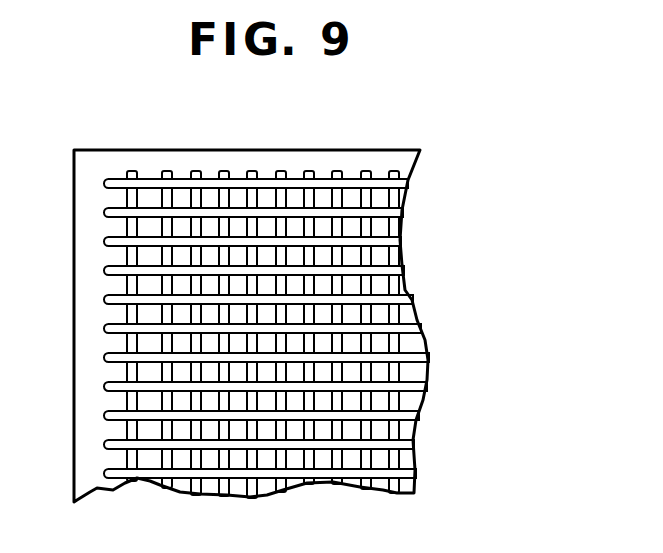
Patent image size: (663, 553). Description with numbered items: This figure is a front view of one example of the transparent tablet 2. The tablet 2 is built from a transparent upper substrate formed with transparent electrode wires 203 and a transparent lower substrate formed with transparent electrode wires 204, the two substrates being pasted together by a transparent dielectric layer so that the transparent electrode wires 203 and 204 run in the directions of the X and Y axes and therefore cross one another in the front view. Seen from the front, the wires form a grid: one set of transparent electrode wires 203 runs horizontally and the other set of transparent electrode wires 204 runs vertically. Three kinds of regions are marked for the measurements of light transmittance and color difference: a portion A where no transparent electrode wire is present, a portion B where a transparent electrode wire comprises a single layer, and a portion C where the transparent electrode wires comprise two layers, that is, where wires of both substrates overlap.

The transparent tablet 2 is at (413, 146).
The transparent electrode wires 203 is at (408, 180).
The transparent electrode wires 204 is at (340, 170).
The portion where transparent electrode wire is not present A is at (267, 173).
The portion where a transparent electrode wire comprises a single layer B is at (185, 183).
The portion where transparent electrode wires comprise two layers C is at (137, 187).